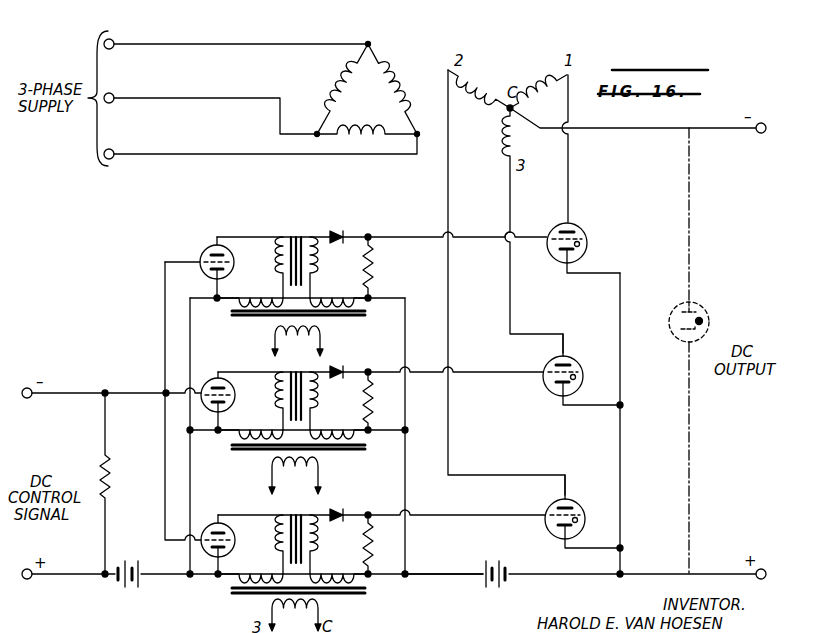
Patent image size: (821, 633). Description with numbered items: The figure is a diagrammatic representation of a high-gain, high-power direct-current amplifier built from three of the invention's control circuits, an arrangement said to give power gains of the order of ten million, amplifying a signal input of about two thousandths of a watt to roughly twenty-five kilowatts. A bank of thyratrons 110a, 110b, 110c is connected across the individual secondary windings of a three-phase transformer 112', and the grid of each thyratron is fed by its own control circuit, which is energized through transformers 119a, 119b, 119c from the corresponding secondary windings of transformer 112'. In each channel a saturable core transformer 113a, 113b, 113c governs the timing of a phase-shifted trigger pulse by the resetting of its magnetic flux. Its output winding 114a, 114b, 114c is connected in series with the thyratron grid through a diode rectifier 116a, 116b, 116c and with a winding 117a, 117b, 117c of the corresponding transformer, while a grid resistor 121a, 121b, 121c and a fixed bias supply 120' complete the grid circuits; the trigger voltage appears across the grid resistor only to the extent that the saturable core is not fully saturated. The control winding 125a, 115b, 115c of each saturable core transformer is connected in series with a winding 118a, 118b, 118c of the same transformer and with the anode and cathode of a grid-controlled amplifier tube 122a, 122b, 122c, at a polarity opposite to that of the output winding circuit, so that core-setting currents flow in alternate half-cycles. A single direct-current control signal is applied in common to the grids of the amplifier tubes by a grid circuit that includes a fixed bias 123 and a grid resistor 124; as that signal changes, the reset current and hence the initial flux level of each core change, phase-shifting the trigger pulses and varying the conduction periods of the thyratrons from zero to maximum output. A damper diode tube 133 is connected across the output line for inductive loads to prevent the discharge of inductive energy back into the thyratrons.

The three-phase transformer 112' is at (373, 88).
The thyratron 110a is at (586, 233).
The thyratron 110b is at (582, 366).
The thyratron 110c is at (582, 508).
The damper diode tube 133 is at (675, 338).
The amplifier tube 122a is at (203, 247).
The amplifier tube 122b is at (204, 381).
The amplifier tube 122c is at (204, 524).
The control winding 125a is at (280, 262).
The control winding 115b is at (280, 396).
The control winding 115c is at (280, 540).
The winding 118a is at (272, 296).
The winding 118b is at (272, 428).
The winding 118c is at (272, 572).
The saturable core transformer 113a is at (297, 237).
The saturable core transformer 113b is at (297, 372).
The saturable core transformer 113c is at (297, 515).
The output winding 114a is at (312, 262).
The output winding 114b is at (312, 396).
The output winding 114c is at (312, 540).
The diode rectifier 116a is at (335, 232).
The diode rectifier 116b is at (335, 367).
The diode rectifier 116c is at (335, 510).
The winding 117a is at (343, 296).
The winding 117b is at (343, 428).
The winding 117c is at (343, 572).
The grid resistor 121a is at (372, 264).
The grid resistor 121b is at (372, 398).
The grid resistor 121c is at (372, 542).
The transformer 119a is at (366, 318).
The transformer 119b is at (366, 452).
The transformer 119c is at (366, 595).
The grid resistor 124 is at (110, 487).
The fixed bias 123 is at (138, 587).
The fixed bias supply 120' is at (508, 580).